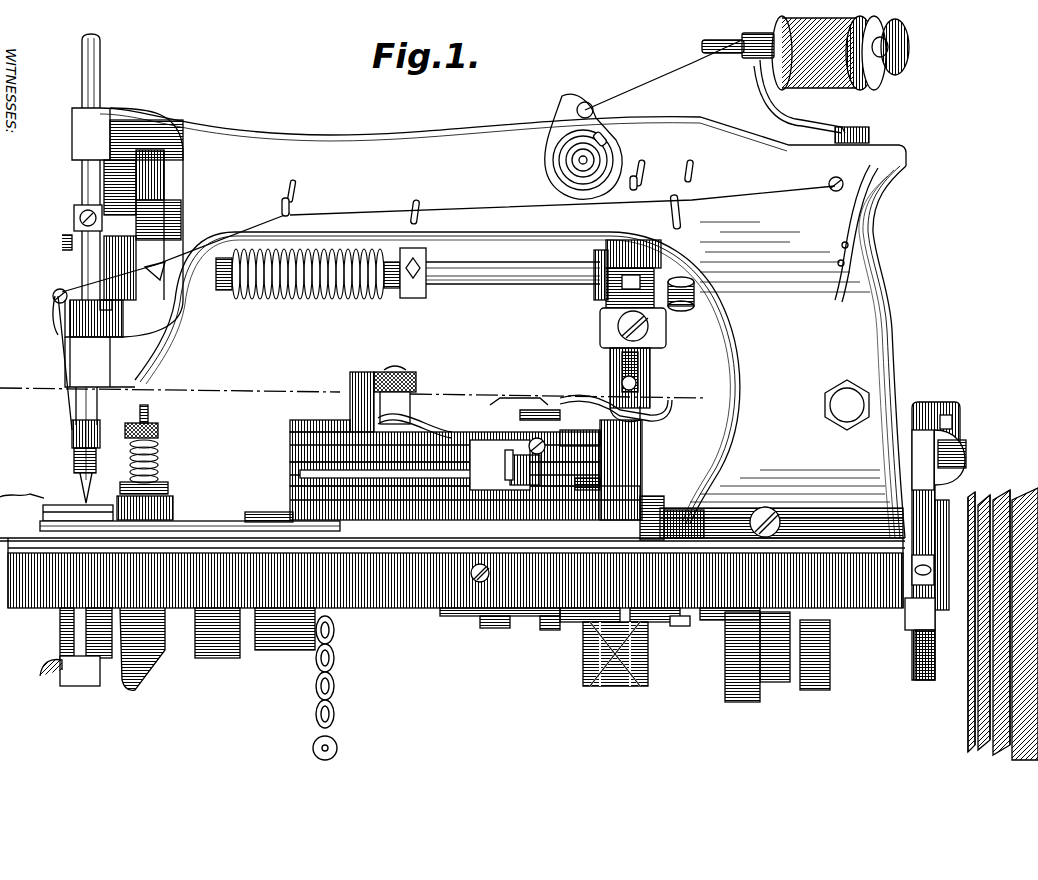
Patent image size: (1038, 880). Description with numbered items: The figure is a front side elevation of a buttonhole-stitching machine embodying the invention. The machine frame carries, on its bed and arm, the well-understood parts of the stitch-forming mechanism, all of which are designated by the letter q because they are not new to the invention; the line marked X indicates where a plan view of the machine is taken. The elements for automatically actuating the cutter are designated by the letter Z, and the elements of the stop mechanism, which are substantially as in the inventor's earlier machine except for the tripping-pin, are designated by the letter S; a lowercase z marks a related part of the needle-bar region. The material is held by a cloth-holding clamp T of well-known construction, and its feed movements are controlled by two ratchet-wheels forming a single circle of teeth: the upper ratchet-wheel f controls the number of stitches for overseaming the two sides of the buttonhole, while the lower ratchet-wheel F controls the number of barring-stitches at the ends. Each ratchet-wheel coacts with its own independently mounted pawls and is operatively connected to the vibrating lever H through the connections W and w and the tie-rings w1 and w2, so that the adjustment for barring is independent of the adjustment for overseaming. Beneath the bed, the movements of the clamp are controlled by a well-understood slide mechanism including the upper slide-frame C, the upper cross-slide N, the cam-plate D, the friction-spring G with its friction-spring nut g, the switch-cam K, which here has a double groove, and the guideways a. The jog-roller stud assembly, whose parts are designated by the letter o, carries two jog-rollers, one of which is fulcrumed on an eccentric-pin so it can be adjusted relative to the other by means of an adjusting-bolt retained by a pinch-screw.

The guideways a is at (452, 559).
The stitch-forming mechanism parts q is at (100, 80).
The needle bar clamp z is at (70, 242).
The cutter-actuating elements Z is at (352, 290).
The cloth-holding clamp T is at (200, 522).
The friction-spring G is at (410, 418).
The friction-spring nut g is at (400, 372).
The upper slide-frame C is at (300, 498).
The upper ratchet-wheel f is at (306, 426).
The tie-ring w2 is at (296, 440).
The lower ratchet-wheel F is at (296, 446).
The tie-ring w1 is at (296, 458).
The cam-plate D is at (300, 486).
The upper cross-slide N is at (380, 506).
The connection W is at (560, 424).
The connection w is at (548, 470).
The jog-roller stud parts o is at (545, 443).
The vibrating lever H is at (642, 460).
The stop-mechanism parts S is at (336, 672).
The switch-cam K is at (640, 672).
The machine frame arm X is at (690, 398).